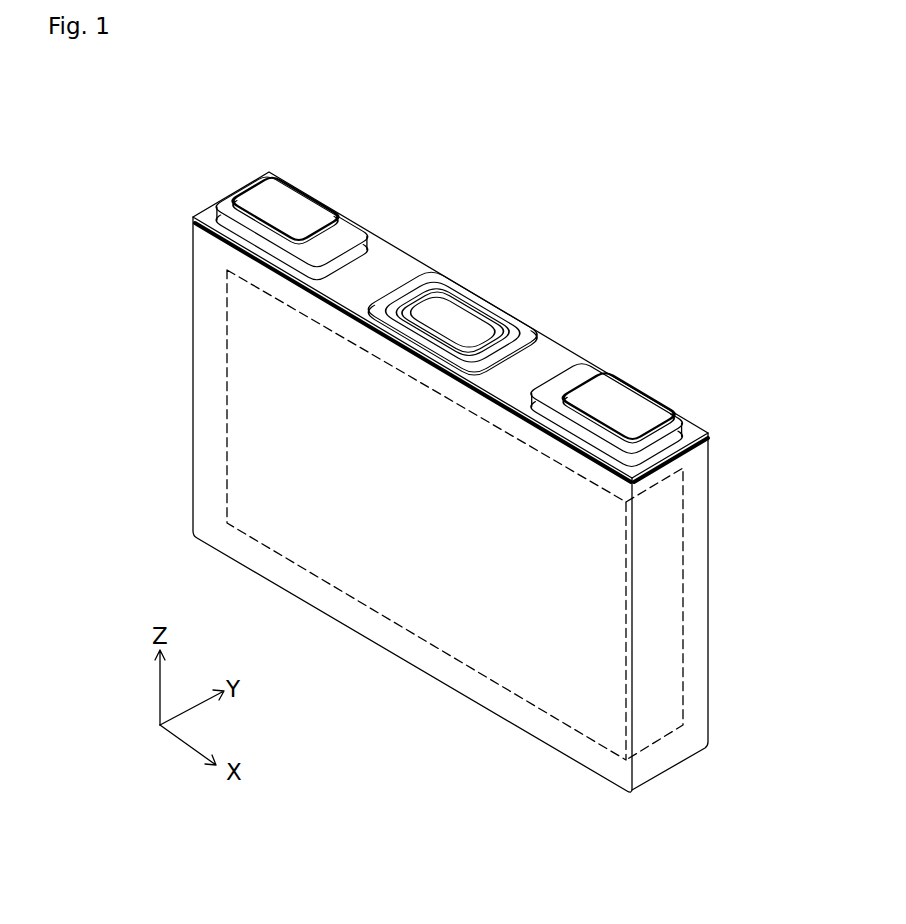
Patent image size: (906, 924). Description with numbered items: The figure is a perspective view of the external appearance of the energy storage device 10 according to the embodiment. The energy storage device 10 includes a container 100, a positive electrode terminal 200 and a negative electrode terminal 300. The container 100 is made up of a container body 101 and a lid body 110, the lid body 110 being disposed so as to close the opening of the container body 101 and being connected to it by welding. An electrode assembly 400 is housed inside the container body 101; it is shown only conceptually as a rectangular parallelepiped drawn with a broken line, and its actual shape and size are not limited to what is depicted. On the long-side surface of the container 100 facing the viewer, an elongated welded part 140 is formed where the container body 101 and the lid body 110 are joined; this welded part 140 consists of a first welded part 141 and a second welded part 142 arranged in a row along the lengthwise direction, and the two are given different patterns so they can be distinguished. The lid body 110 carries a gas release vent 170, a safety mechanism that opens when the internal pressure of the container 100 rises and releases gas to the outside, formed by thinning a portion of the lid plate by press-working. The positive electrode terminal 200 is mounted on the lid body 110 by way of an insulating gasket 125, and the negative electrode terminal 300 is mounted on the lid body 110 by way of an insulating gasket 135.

The energy storage device 10 is at (723, 126).
The container 100 is at (117, 340).
The container body 101 is at (213, 406).
The lid body 110 is at (344, 294).
The gasket 125 is at (347, 233).
The gasket 135 is at (588, 373).
The welded part 140 is at (625, 192).
The first welded part 141 is at (517, 413).
The second welded part 142 is at (380, 335).
The gas release vent 170 is at (453, 330).
The positive electrode terminal 200 is at (292, 212).
The negative electrode terminal 300 is at (630, 400).
The electrode assembly 400 is at (227, 465).